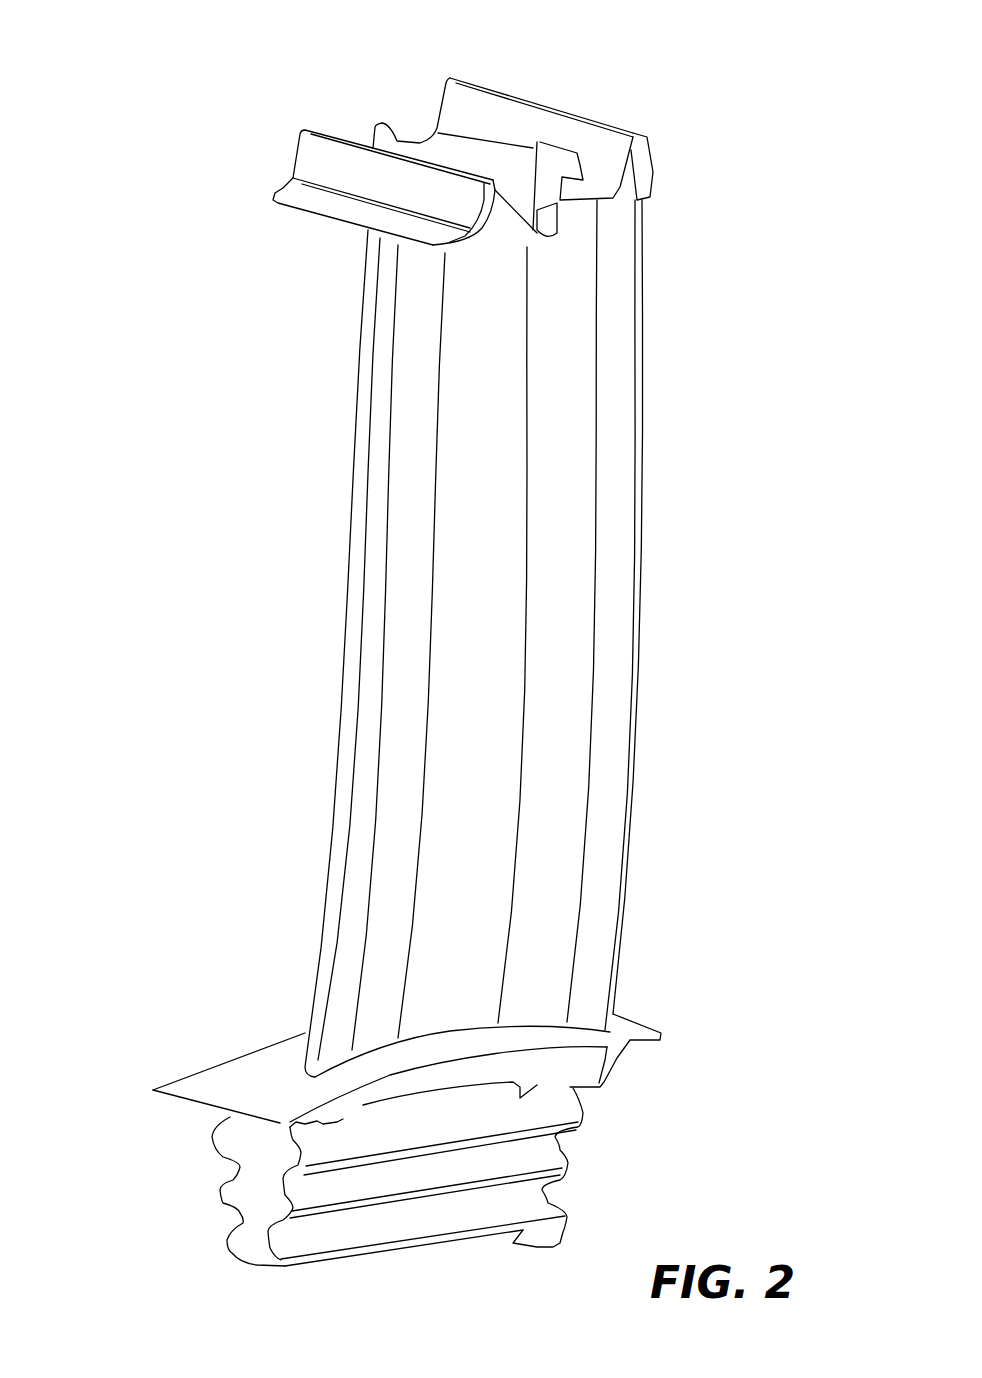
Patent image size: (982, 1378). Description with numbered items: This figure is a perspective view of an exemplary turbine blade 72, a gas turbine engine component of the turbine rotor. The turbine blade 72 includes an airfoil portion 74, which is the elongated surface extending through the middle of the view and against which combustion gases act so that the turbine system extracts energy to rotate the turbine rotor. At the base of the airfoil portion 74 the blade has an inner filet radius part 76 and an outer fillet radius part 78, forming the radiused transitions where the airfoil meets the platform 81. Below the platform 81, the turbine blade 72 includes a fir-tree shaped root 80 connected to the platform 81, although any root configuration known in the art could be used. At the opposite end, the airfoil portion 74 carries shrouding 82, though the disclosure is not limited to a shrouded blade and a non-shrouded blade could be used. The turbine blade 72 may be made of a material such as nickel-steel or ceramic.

The turbine blade 72 is at (250, 272).
The airfoil portion 74 is at (612, 612).
The inner filet radius part 76 is at (579, 1028).
The outer fillet radius part 78 is at (290, 1058).
The root 80 is at (237, 1200).
The platform 81 is at (175, 1089).
The shrouding 82 is at (601, 122).